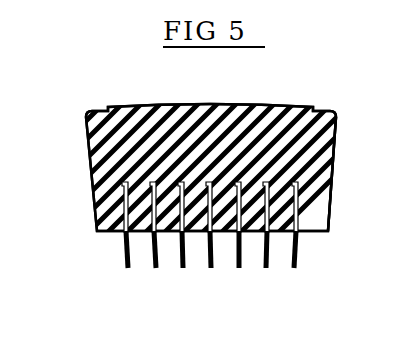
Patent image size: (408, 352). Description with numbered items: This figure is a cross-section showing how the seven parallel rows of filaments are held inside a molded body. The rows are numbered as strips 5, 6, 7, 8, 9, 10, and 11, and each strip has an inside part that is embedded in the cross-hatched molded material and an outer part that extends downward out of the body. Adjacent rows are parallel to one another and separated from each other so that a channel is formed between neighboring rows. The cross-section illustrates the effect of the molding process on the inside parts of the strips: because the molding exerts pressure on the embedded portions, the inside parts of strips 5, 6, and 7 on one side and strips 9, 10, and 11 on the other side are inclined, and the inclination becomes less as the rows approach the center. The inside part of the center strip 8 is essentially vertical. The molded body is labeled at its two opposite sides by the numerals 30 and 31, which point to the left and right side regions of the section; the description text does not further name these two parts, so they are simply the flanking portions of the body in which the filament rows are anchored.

The row of filaments 5 is at (125, 246).
The row of filaments 6 is at (156, 255).
The row of filaments 7 is at (183, 258).
The row of filaments 8 is at (212, 262).
The row of filaments 9 is at (241, 260).
The row of filaments 10 is at (268, 260).
The row of filaments 11 is at (296, 250).
The molded body 30 is at (92, 190).
The molded body side 31 is at (334, 152).